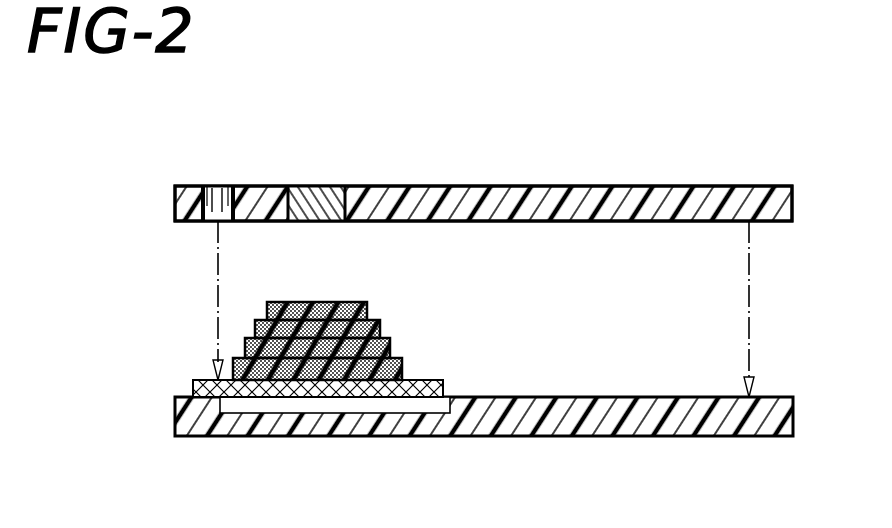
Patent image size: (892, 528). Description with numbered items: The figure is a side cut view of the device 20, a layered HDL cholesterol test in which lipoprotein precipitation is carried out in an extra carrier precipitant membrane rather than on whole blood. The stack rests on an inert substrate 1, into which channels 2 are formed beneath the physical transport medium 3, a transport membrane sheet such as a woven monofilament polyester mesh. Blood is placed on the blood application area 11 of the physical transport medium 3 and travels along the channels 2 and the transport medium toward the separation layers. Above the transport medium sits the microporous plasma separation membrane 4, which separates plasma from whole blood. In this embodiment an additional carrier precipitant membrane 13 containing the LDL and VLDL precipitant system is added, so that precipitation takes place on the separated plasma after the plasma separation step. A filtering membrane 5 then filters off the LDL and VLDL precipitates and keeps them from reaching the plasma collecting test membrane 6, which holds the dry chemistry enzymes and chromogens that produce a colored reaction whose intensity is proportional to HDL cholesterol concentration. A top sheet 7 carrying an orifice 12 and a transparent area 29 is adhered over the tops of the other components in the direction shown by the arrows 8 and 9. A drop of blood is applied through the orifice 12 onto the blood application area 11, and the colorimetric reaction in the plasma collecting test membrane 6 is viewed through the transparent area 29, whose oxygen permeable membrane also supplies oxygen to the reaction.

The inert substrate 1 is at (652, 436).
The channels 2 is at (233, 416).
The physical transport medium 3 is at (443, 390).
The microporous plasma separation membrane 4 is at (405, 368).
The filtering membrane 5 is at (380, 322).
The plasma collecting test membrane 6 is at (365, 303).
The top sheet 7 is at (697, 186).
The arrow 8 is at (750, 302).
The arrow 9 is at (218, 287).
The blood application area 11 is at (205, 380).
The orifice 12 is at (212, 186).
The carrier precipitant membrane 13 is at (392, 345).
The device 20 is at (526, 146).
The transparent area 29 is at (330, 186).